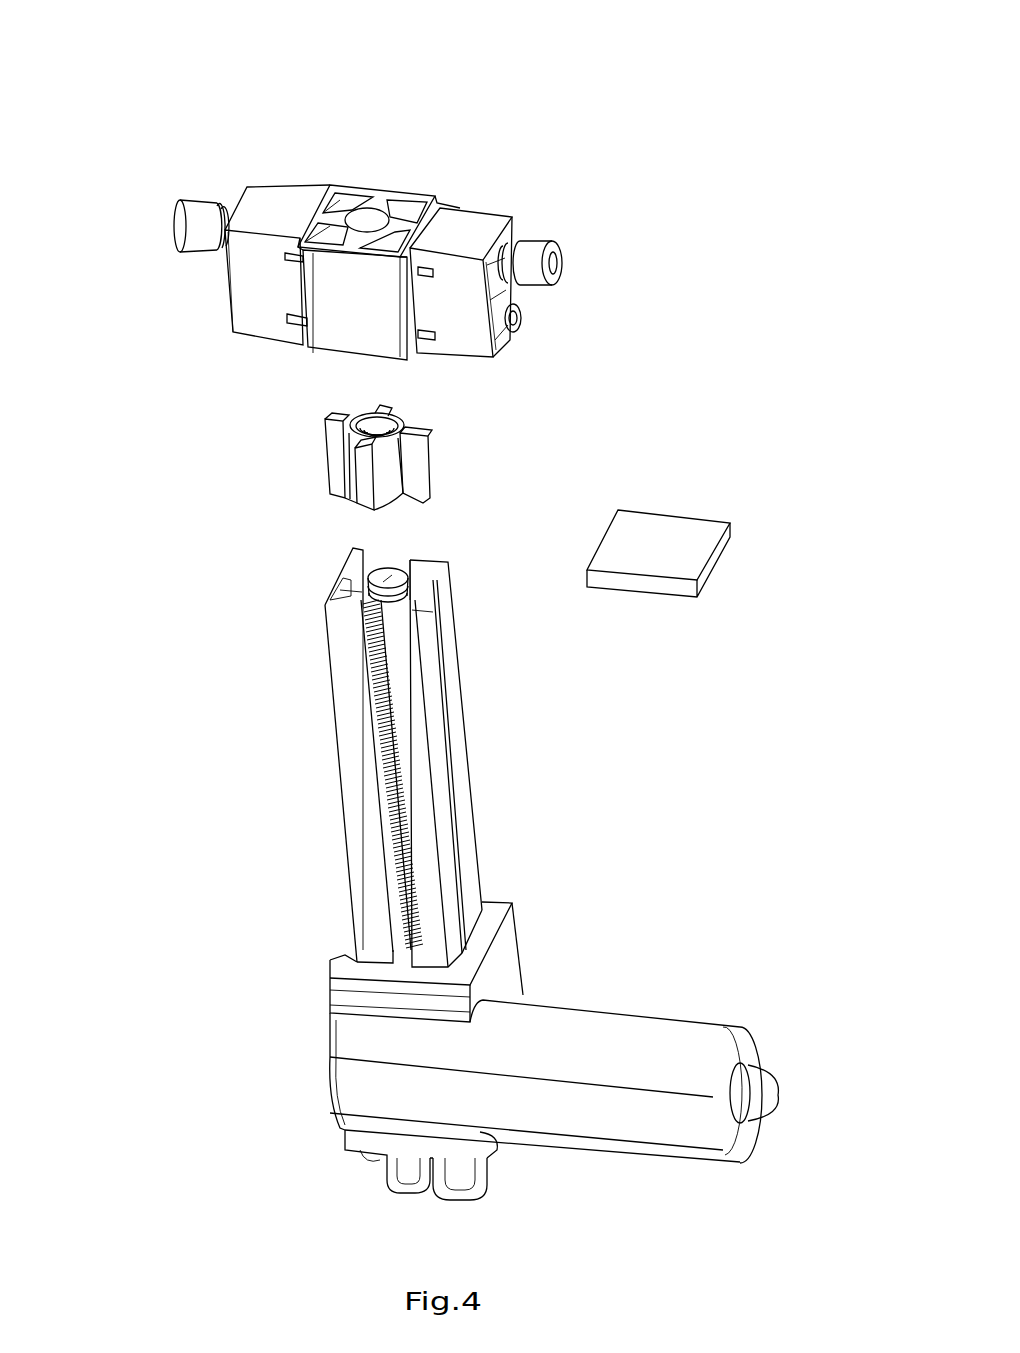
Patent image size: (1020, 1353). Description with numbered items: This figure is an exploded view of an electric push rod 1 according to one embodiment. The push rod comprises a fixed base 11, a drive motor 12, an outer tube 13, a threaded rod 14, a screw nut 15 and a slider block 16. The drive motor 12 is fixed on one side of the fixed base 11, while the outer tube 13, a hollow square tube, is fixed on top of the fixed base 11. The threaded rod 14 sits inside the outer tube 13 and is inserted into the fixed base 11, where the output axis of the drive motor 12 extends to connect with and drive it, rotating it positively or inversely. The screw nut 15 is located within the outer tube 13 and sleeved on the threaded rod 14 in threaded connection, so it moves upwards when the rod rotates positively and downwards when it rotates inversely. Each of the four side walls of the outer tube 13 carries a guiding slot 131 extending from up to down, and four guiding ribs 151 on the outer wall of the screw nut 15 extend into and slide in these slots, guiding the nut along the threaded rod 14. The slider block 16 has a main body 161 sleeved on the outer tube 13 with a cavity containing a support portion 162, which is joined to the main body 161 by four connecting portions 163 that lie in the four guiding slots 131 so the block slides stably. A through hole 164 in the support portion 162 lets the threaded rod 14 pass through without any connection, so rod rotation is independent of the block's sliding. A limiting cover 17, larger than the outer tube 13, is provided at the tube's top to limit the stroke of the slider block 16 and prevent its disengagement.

The electric push rod 1 is at (63, 17).
The fixed base 11 is at (510, 965).
The drive motor 12 is at (638, 1033).
The outer tube 13 is at (352, 798).
The guiding slot 131 is at (409, 551).
The threaded rod 14 is at (362, 597).
The screw nut 15 is at (358, 414).
The guiding rib 151 is at (392, 408).
The slider block 16 is at (548, 331).
The main body 161 is at (347, 320).
The support portion 162 is at (352, 208).
The connecting portion 163 is at (390, 200).
The through hole 164 is at (366, 208).
The limiting cover 17 is at (682, 532).